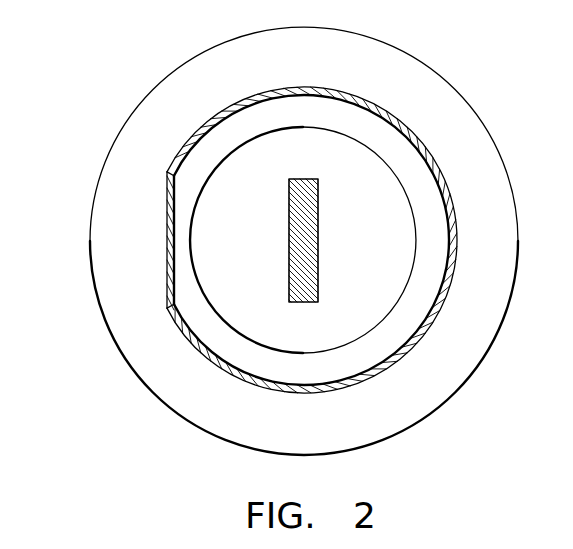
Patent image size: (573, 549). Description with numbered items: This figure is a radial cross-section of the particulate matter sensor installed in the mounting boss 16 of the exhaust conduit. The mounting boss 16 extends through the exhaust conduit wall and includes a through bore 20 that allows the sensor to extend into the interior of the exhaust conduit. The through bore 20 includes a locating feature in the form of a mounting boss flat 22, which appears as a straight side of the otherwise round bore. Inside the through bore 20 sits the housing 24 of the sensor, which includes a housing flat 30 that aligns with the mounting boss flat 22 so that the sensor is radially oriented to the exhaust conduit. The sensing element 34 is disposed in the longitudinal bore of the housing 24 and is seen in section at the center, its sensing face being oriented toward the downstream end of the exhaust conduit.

The mounting boss 16 is at (138, 353).
The through bore 20 is at (366, 104).
The mounting boss flat 22 is at (171, 193).
The housing 24 is at (243, 350).
The housing flat 30 is at (167, 258).
The sensing element 34 is at (318, 220).